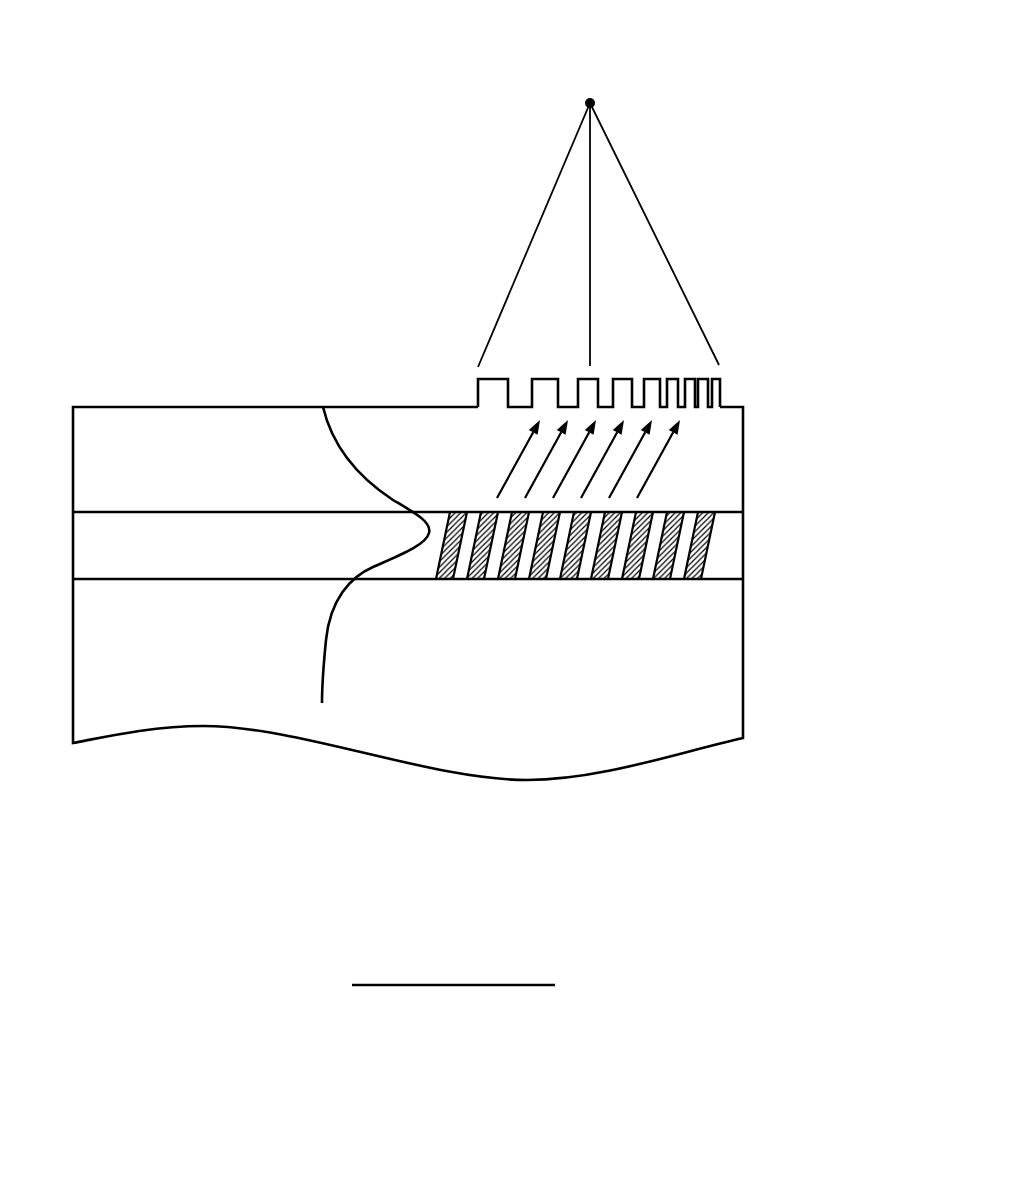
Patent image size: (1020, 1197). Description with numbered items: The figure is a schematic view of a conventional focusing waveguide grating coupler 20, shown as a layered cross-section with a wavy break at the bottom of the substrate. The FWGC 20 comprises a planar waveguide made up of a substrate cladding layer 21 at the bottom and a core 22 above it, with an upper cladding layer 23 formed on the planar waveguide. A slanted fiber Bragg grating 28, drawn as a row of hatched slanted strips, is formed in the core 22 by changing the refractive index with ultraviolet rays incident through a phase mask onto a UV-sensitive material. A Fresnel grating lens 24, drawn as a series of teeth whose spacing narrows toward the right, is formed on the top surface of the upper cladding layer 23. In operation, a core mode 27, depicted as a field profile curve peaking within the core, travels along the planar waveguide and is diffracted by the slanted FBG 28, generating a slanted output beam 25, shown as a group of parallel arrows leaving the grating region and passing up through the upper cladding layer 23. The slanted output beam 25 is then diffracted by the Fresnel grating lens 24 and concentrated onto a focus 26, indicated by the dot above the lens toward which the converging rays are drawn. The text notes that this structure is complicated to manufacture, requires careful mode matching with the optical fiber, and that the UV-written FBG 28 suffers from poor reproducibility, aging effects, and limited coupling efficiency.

The focusing waveguide grating coupler 20 is at (768, 207).
The substrate cladding layer 21 is at (732, 677).
The core 22 is at (732, 533).
The upper cladding layer 23 is at (732, 465).
The Fresnel grating lens 24 is at (722, 388).
The slanted output beam 25 is at (509, 472).
The focus 26 is at (595, 101).
The core mode 27 is at (337, 453).
The slanted fiber Bragg grating 28 is at (702, 553).